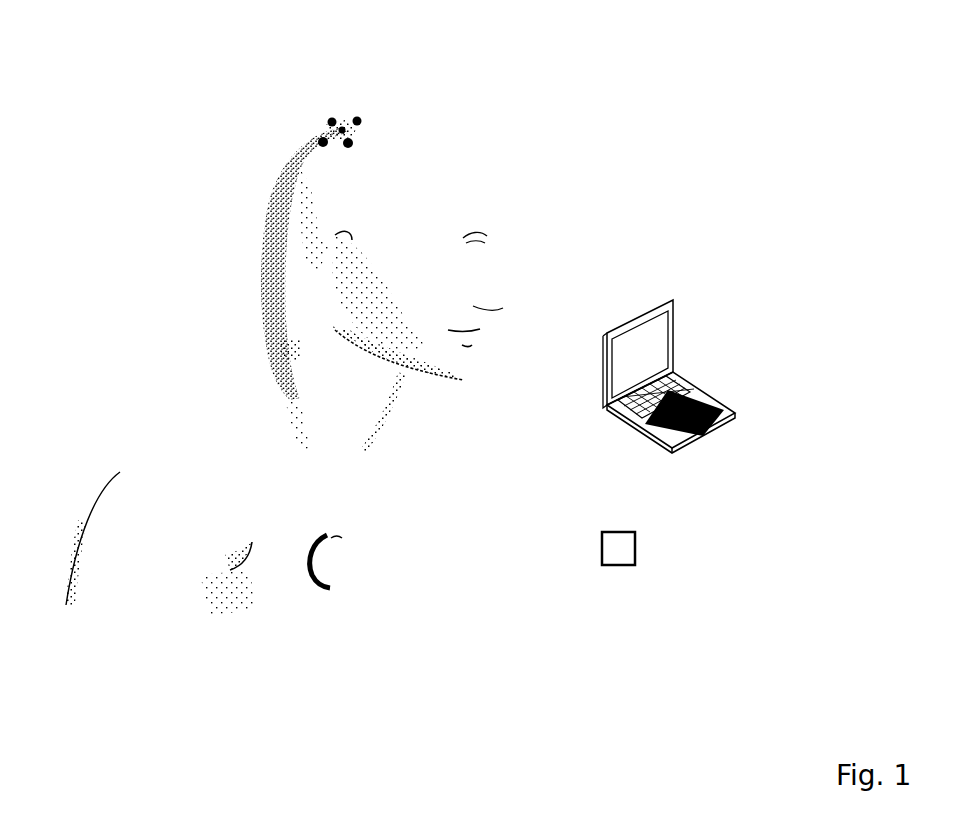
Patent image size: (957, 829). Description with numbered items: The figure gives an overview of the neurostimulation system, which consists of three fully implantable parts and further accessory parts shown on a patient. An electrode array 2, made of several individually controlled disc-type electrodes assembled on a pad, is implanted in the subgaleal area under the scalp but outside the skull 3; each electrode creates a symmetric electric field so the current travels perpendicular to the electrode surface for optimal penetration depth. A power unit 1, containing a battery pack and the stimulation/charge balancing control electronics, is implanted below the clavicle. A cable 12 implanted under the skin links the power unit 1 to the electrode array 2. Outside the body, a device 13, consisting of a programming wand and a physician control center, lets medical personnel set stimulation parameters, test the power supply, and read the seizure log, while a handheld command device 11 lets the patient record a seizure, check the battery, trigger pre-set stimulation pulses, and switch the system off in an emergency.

The power unit 1 is at (312, 556).
The electrode array 2 is at (364, 121).
The skull 3 is at (400, 117).
The handheld command device 11 is at (618, 566).
The cable 12 is at (294, 348).
The device 13 is at (713, 418).